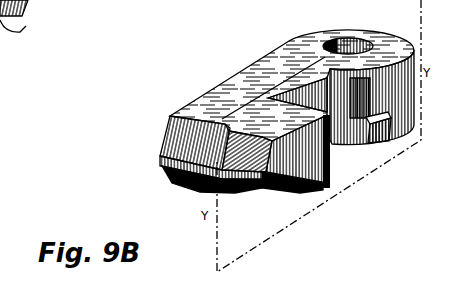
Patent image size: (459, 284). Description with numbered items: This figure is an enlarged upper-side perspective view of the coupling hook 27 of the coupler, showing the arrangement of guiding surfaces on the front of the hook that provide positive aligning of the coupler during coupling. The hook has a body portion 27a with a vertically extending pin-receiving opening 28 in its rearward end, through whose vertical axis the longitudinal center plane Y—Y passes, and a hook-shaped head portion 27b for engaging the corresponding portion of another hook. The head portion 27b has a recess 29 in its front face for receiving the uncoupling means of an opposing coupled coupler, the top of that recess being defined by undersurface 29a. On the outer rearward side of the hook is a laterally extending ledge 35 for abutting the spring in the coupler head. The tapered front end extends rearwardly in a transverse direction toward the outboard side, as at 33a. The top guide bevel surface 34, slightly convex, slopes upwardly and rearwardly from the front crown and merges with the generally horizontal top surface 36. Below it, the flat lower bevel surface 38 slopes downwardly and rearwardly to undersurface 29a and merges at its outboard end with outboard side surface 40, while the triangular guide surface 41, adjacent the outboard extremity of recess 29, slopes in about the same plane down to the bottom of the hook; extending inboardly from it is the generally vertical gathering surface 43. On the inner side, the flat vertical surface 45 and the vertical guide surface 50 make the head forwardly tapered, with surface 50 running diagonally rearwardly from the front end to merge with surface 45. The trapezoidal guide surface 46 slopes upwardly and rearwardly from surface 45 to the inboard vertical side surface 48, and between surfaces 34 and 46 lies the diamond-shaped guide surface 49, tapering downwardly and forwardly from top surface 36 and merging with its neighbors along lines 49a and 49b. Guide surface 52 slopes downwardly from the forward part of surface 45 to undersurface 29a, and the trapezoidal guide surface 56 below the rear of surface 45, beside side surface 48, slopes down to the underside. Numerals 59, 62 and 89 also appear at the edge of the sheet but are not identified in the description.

The coupling hook 27 is at (313, 28).
The body portion 27a is at (292, 62).
The hook-shaped head portion 27b is at (212, 98).
The vertically extending opening 28 is at (310, 63).
The recess 29 is at (270, 190).
The undersurface 29a is at (232, 190).
The transverse portion of front end 33a is at (148, 166).
The top guide bevel surface 34 is at (182, 133).
The laterally extending ledge 35 is at (14, 16).
The top surface 36 is at (326, 32).
The lower bevel guide surface 38 is at (175, 179).
The outboard side surface 40 is at (233, 0).
The triangular guide surface 41 is at (168, 190).
The gathering surface 43 is at (199, 192).
The vertical surface 45 is at (317, 168).
The trapezoidal guide surface 46 is at (327, 122).
The inboard vertical side surface 48 is at (333, 162).
The diamond-shaped guide surface 49 is at (246, 128).
The merge line 49a is at (221, 118).
The merge line 49b is at (265, 128).
The vertical guide surface 50 is at (244, 183).
The guide surface 52 is at (260, 190).
The guide surface 56 is at (317, 208).
The lower member 59 is at (348, 283).
The lower member 62 is at (318, 279).
The lower member 89 is at (369, 277).